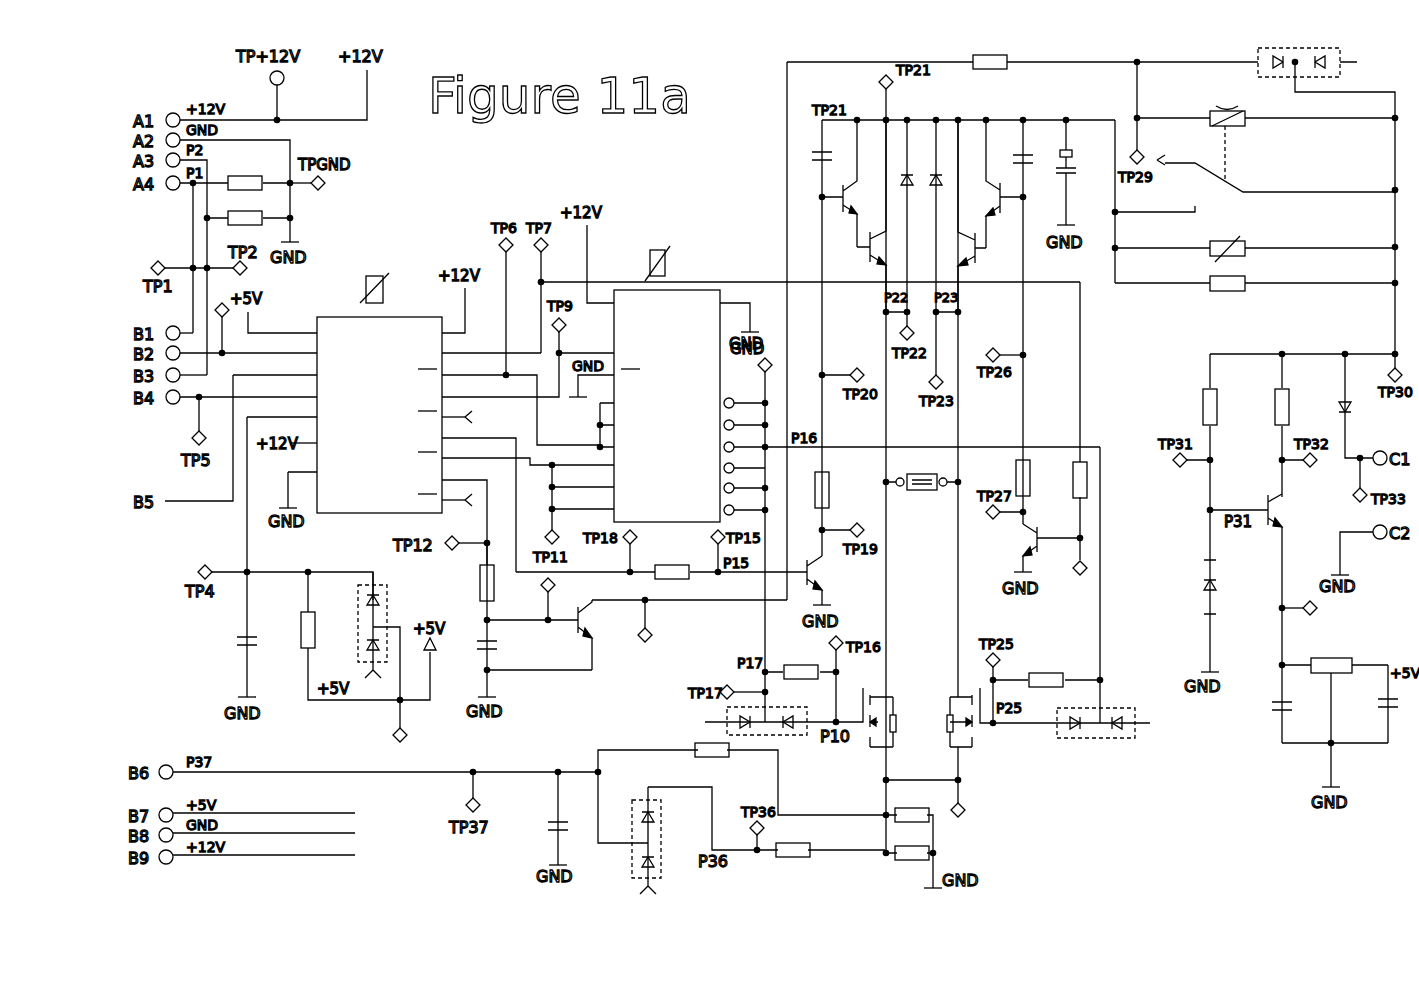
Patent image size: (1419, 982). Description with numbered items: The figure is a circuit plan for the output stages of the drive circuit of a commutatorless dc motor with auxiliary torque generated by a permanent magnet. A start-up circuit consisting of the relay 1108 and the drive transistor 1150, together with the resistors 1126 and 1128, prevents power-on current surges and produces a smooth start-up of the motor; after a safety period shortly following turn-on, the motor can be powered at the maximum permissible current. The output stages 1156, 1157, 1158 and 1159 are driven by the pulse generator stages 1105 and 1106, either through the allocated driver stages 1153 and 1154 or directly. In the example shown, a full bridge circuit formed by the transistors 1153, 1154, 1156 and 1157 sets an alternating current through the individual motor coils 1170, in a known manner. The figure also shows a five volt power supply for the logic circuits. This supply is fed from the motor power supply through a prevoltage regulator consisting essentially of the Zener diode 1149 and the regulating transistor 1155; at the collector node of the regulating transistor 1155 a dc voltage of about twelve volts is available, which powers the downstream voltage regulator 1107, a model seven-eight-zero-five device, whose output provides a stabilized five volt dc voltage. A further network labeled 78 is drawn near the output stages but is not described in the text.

The pulse generator stage 1105 is at (348, 316).
The pulse generator stage 1106 is at (712, 282).
The voltage regulator 1107 is at (1345, 660).
The relay 1108 is at (1225, 148).
The resistor 1126 is at (1220, 286).
The resistor 1128 is at (1215, 243).
The Zener diode 1149 is at (1213, 592).
The drive transistor 1150 is at (591, 613).
The driver stage 1153 is at (843, 189).
The driver stage 1154 is at (1005, 205).
The regulating transistor 1155 is at (1275, 506).
The output stage 1156 is at (906, 697).
The output stage 1157 is at (949, 697).
The output stage 1158 is at (873, 270).
The output stage 1159 is at (978, 252).
The motor coil 1170 is at (922, 492).
The resistor network 78 is at (923, 804).